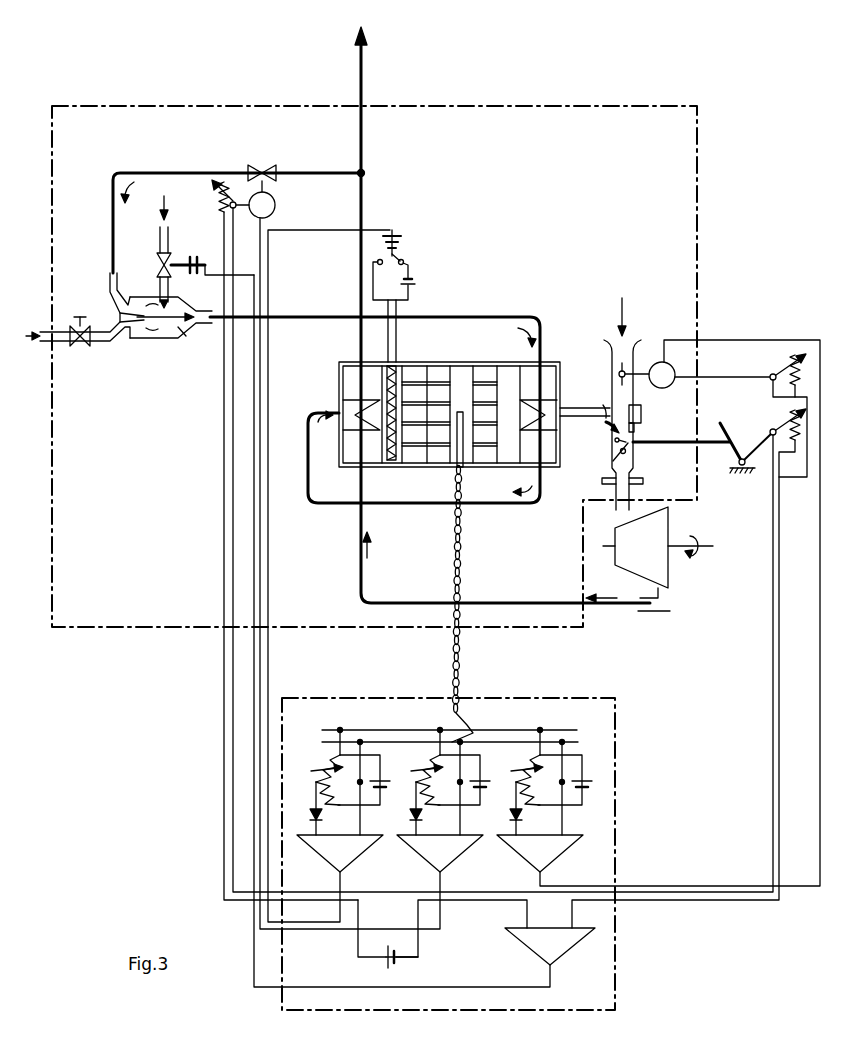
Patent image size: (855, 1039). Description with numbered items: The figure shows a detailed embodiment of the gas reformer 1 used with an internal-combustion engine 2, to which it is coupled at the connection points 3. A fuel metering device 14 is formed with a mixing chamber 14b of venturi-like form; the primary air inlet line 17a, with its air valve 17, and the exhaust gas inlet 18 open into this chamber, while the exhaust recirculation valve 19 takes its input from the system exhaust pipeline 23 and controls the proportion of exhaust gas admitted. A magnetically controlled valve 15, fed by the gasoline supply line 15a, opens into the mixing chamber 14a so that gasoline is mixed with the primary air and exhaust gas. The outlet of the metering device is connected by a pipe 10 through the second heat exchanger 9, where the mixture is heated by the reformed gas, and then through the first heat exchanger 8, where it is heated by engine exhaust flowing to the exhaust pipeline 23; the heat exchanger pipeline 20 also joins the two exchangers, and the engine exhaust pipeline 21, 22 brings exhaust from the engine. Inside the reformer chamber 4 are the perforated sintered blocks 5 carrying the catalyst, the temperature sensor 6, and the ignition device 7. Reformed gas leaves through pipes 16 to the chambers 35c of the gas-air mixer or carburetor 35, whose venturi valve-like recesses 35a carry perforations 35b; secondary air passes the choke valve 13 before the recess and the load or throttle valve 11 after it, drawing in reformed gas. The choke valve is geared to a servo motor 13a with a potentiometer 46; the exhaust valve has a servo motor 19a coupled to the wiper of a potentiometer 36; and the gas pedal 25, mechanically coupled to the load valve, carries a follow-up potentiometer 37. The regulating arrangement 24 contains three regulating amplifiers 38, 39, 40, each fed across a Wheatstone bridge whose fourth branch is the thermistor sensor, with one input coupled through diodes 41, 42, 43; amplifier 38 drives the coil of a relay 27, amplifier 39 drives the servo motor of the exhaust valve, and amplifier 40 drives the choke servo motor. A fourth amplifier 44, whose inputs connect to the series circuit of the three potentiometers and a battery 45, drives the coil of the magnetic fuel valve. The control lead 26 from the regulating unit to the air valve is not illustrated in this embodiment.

The gas reformer 1 is at (719, 257).
The internal-combustion engine 2 is at (628, 566).
The connection points 3 is at (616, 516).
The reformer chamber 4 is at (463, 358).
The sintered blocks 5 is at (435, 457).
The temperature sensor 6 is at (463, 467).
The ignition device 7 is at (389, 458).
The first heat exchanger 8 is at (348, 458).
The second heat exchanger 9 is at (550, 467).
The pipe 10 is at (463, 314).
The load or throttle valve 11 is at (628, 457).
The choke valve 13 is at (618, 368).
The servo motor 13a is at (655, 358).
The fuel metering device 14 is at (150, 329).
The mixing chamber 14a is at (186, 336).
The mixing chamber with venturi-like valve 14b is at (137, 326).
The magnetically controlled valve 15 is at (158, 265).
The gasoline supply line 15a is at (168, 236).
The pipes 16 is at (585, 400).
The air valve 17 is at (88, 342).
The primary air inlet line 17a is at (60, 346).
The exhaust recirculation pipeline 18 is at (108, 205).
The exhaust recirculation valve 19 is at (259, 167).
The servo motor 19a is at (275, 205).
The heat exchanger pipeline 20 is at (481, 507).
The internal combustion engine exhaust pipeline 21 is at (398, 582).
The internal combustion engine exhaust pipeline 22 is at (666, 603).
The system exhaust pipeline 23 is at (362, 72).
The regulating arrangement 24 is at (650, 752).
The gas pedal 25 is at (728, 420).
The control lead 26 is at (252, 588).
The relay 27 is at (398, 254).
The gas-air mixer or carburetor 35 is at (636, 429).
The venturi valve-like recesses 35a is at (641, 412).
The perforations 35b is at (613, 439).
The chambers 35c is at (608, 425).
The potentiometer 36 is at (212, 198).
The follow-up potentiometer 37 is at (780, 414).
The regulating amplifier 38 is at (350, 853).
The regulating amplifier 39 is at (450, 853).
The regulating amplifier 40 is at (550, 853).
The diode 41 is at (310, 815).
The diode 42 is at (410, 815).
The diode 43 is at (510, 815).
The fourth amplifier 44 is at (568, 962).
The battery 45 is at (385, 962).
The potentiometer 46 is at (768, 359).